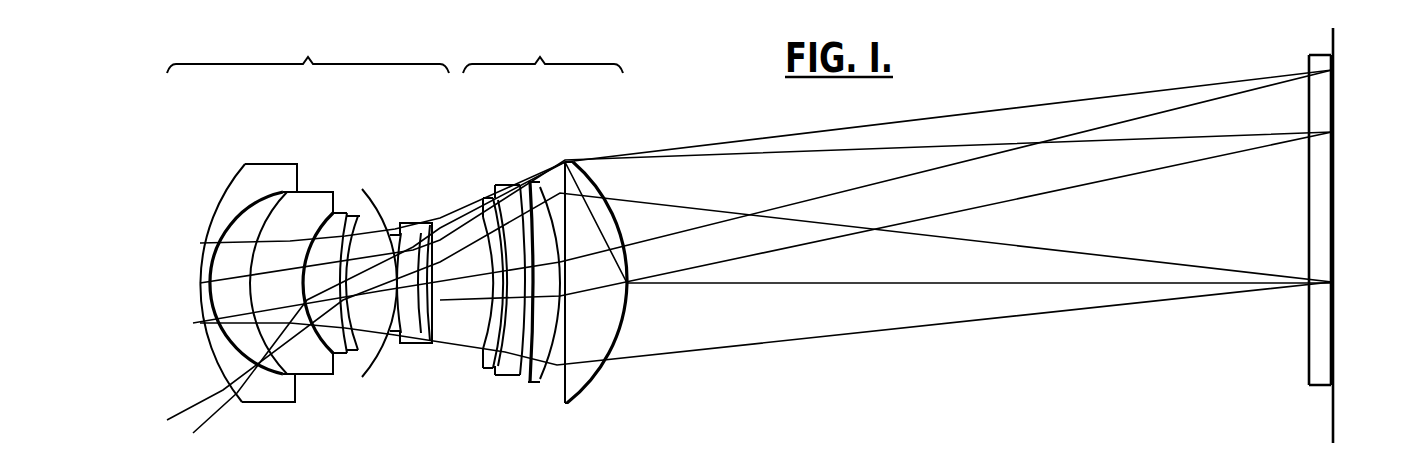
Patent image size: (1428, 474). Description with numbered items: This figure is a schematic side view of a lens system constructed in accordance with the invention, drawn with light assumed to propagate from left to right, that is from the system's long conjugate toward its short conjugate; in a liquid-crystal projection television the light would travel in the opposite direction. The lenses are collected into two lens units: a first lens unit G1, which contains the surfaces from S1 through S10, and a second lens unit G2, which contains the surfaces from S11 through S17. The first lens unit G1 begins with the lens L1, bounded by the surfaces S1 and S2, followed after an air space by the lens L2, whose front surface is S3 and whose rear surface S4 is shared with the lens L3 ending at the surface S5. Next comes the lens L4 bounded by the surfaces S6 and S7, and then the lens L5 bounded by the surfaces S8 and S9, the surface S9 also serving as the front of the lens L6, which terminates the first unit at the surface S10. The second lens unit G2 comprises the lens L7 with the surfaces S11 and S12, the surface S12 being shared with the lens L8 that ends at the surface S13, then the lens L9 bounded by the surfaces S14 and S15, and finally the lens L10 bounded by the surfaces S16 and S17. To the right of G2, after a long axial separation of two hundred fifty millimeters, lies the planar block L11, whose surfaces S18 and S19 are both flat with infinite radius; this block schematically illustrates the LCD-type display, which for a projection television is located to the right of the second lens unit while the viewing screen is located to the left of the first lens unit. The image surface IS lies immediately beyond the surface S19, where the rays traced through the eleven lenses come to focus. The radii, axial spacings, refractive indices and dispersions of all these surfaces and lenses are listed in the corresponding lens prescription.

The first lens unit G1 is at (308, 49).
The second lens unit G2 is at (543, 49).
The lens L1 is at (198, 283).
The lens L2 is at (267, 286).
The lens L3 is at (323, 277).
The lens L4 is at (380, 251).
The lens L5 is at (390, 334).
The lens L6 is at (449, 285).
The lens L7 is at (481, 297).
The lens L8 is at (526, 267).
The lens L9 is at (577, 278).
The lens L10 is at (646, 250).
The planar block L11 is at (1310, 237).
The lens surface S1 is at (190, 363).
The lens surface S2 is at (223, 390).
The lens surface S3 is at (287, 192).
The lens surface S4 is at (303, 373).
The lens surface S5 is at (345, 360).
The lens surface S6 is at (350, 212).
The lens surface S7 is at (357, 227).
The lens surface S8 is at (372, 345).
The lens surface S9 is at (422, 353).
The lens surface S10 is at (437, 337).
The lens surface S11 is at (482, 203).
The lens surface S12 is at (505, 378).
The lens surface S13 is at (520, 187).
The lens surface S14 is at (540, 187).
The lens surface S15 is at (540, 378).
The lens surface S16 is at (567, 162).
The lens surface S17 is at (625, 322).
The lens surface S18 is at (1307, 348).
The lens surface S19 is at (1333, 323).
The image surface IS is at (1335, 412).